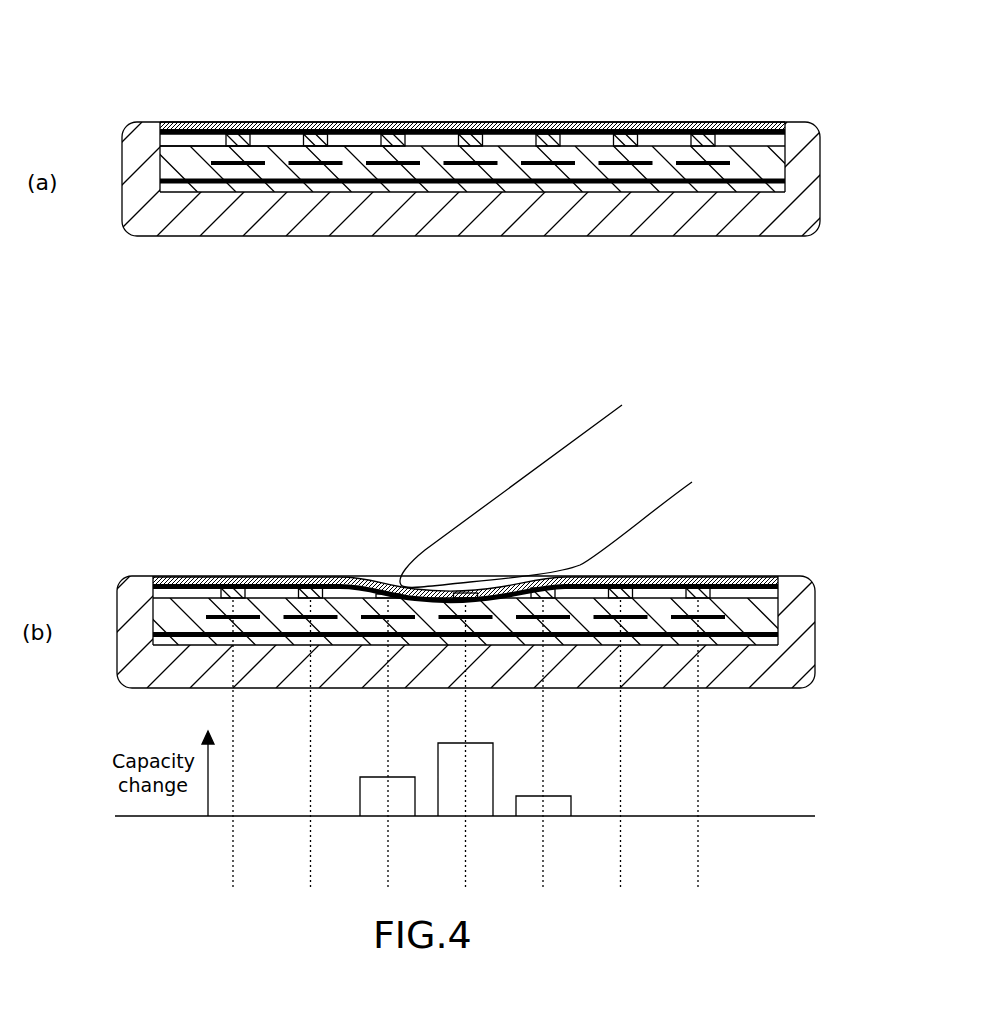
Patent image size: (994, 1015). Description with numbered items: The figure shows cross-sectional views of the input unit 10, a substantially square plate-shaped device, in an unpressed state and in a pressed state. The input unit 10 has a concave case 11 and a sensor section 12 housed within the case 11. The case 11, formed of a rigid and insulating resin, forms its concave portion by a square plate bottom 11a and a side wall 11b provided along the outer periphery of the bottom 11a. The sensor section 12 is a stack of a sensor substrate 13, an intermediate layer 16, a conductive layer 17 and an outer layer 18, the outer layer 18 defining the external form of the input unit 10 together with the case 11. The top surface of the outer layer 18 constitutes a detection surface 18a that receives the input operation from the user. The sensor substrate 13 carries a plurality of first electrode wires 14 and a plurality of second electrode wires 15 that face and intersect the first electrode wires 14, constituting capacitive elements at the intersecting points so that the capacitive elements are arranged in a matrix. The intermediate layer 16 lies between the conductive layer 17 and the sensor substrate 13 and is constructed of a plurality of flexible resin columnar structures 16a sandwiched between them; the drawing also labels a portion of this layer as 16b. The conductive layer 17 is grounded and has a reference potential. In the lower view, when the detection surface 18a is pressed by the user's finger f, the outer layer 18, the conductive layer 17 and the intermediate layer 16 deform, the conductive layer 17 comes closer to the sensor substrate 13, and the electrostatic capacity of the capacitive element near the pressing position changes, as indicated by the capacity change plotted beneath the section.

The input unit 10 is at (177, 42).
The case 11 is at (158, 285).
The bottom 11a is at (290, 212).
The side wall 11b is at (128, 150).
The sensor section 12 is at (510, 98).
The sensor substrate 13 is at (788, 178).
The first electrode wires 14 is at (589, 133).
The second electrode wires 15 is at (606, 165).
The intermediate layer 16 is at (788, 158).
The columnar structures 16a is at (216, 130).
The protrusion of dielectric layer 16b is at (246, 132).
The conductive layer 17 is at (648, 126).
The outer layer 18 is at (796, 121).
The detection surface 18a is at (341, 121).
The finger f is at (552, 478).